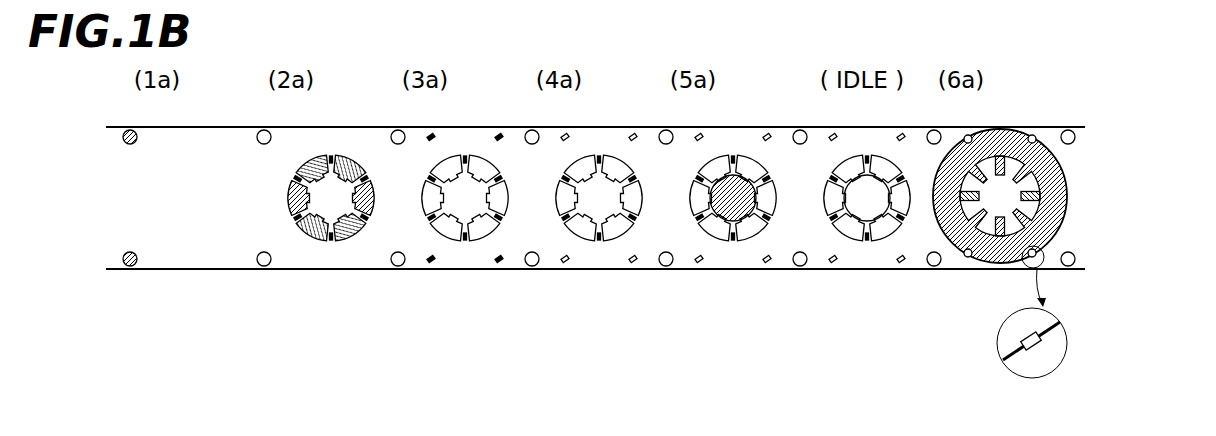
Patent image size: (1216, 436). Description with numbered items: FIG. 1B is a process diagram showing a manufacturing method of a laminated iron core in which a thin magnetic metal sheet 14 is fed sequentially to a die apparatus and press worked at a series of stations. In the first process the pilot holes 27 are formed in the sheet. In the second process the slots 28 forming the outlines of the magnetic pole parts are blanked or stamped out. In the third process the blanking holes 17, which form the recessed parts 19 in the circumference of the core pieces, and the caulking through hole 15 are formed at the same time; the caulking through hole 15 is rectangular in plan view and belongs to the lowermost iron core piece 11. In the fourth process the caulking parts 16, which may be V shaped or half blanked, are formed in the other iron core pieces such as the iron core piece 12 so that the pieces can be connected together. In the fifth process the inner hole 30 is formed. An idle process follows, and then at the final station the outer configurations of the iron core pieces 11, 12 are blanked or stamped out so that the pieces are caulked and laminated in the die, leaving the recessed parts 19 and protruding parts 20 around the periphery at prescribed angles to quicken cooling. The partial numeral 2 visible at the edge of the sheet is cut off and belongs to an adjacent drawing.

The thin magnetic metal sheet 14 is at (222, 147).
The pilot holes 27 is at (134, 266).
The slots 28 is at (312, 240).
The blanking holes 17 is at (431, 263).
The caulking through hole 15 is at (466, 240).
The caulking parts 16 is at (600, 240).
The inner hole 30 is at (733, 232).
The iron core piece 11 is at (1055, 196).
The iron core piece 12 is at (1064, 178).
The recessed parts 19 is at (1040, 332).
The protruding parts 20 is at (1057, 332).
The partial label (adjacent figure) 2 is at (1205, 13).